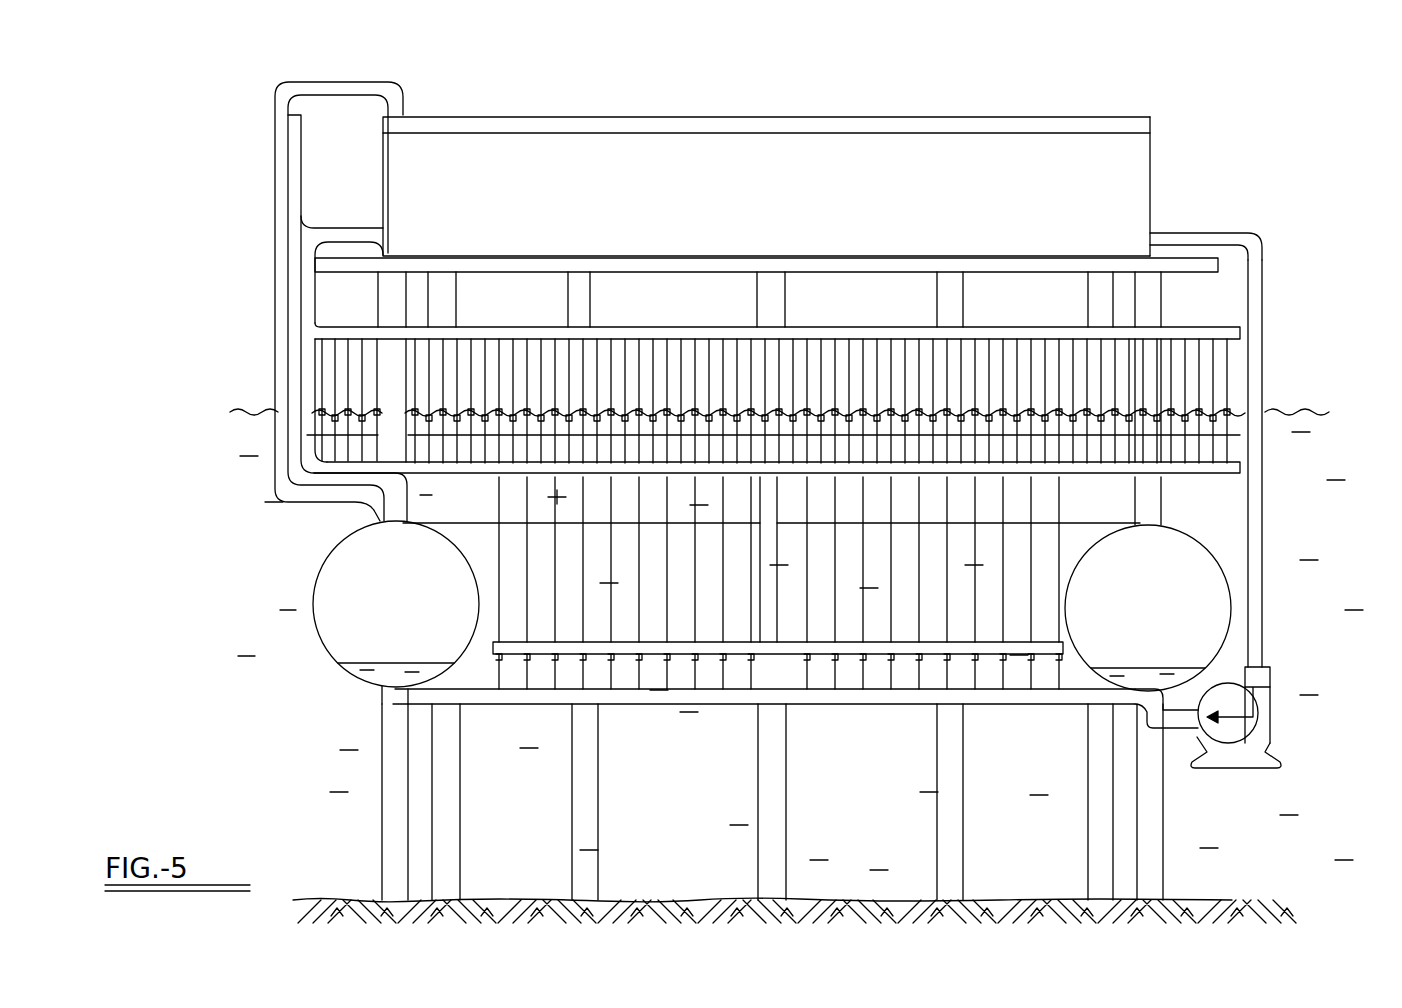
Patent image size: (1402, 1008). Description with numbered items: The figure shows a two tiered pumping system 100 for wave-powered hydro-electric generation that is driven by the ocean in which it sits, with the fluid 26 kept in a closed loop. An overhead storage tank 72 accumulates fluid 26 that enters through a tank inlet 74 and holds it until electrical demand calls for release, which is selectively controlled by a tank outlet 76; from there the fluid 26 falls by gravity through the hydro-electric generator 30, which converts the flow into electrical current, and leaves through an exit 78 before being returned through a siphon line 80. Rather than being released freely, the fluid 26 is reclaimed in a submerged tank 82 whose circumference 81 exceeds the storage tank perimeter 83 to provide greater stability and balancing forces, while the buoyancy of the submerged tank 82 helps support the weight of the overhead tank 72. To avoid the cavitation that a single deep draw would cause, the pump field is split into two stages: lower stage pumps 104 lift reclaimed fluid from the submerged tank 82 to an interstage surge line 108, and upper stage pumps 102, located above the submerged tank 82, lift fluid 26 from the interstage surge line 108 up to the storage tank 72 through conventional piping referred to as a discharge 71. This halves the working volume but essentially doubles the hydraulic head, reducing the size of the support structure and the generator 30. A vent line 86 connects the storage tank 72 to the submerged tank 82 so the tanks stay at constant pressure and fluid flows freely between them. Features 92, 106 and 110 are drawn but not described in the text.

The two tiered pumping system 100 is at (205, 137).
The fluid 26 is at (656, 117).
The storage tank 72 is at (1150, 168).
The vent line 86 is at (275, 204).
The storage tank perimeter 83 is at (383, 150).
The tank inlet 74 is at (378, 232).
The tank outlet 76 is at (1157, 238).
The siphon line 80 is at (1265, 380).
The interstage surge line 108 is at (1240, 470).
The upper stage pumps 102 is at (1240, 366).
The submerged tank 82 is at (1072, 538).
The discharge 71 is at (843, 652).
The lower stage pumps 104 is at (489, 672).
The submerged tank circumference 81 is at (318, 578).
The ballast water 106 is at (1178, 668).
The float neck 92 is at (370, 678).
The support post 110 is at (382, 723).
The hydro-electric generator 30 is at (1270, 712).
The exit 78 is at (1197, 740).